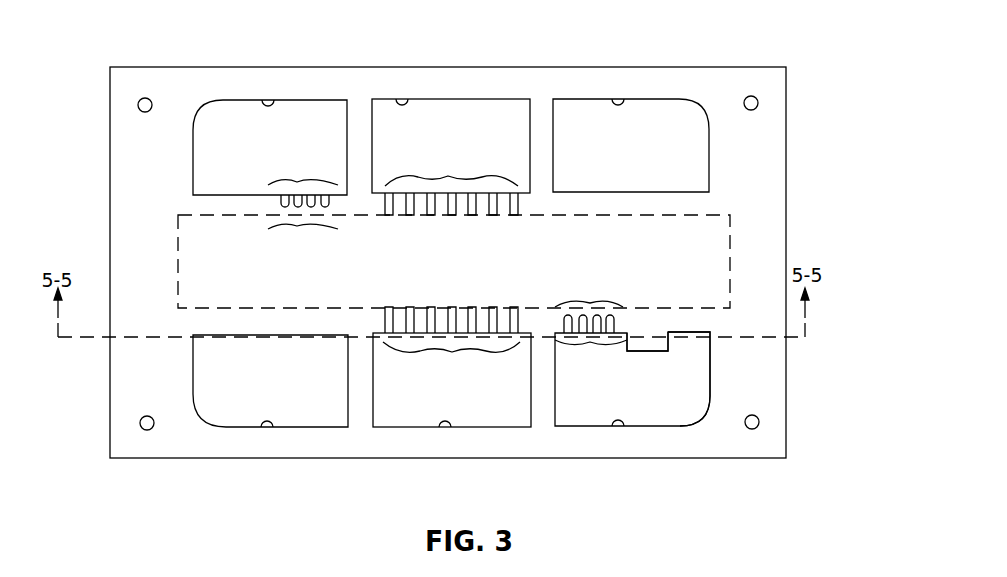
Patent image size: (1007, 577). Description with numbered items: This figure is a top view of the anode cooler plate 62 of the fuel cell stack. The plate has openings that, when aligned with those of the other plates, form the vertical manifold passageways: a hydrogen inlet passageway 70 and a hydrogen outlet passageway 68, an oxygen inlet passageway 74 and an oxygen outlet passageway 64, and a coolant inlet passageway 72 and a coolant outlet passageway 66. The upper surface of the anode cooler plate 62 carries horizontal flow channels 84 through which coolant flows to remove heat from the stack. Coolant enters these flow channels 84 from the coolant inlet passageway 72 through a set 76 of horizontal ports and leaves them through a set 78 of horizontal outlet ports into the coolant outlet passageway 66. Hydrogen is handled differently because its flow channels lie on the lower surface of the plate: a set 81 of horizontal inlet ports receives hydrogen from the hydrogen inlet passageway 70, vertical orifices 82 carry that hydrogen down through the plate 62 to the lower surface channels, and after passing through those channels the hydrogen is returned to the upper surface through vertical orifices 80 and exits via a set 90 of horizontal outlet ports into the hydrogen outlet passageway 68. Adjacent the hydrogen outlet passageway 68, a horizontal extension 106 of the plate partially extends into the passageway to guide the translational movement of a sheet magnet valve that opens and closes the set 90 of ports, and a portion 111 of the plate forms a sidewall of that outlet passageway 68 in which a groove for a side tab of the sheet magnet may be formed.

The anode cooler plate 62 is at (786, 148).
The oxygen outlet passageway 64 is at (262, 419).
The coolant outlet passageway 66 is at (443, 420).
The hydrogen outlet passageway 68 is at (616, 420).
The hydrogen inlet passageway 70 is at (270, 107).
The coolant inlet passageway 72 is at (404, 107).
The oxygen inlet passageway 74 is at (620, 107).
The set of horizontal ports 76 is at (448, 176).
The set of horizontal outlet ports 78 is at (452, 352).
The vertical orifices 80 is at (588, 301).
The set of horizontal inlet ports 81 is at (300, 180).
The vertical orifices 82 is at (299, 226).
The horizontal flow channels 84 is at (730, 235).
The set of horizontal outlet ports 90 is at (598, 340).
The horizontal extension 106 is at (650, 351).
The portion forming sidewall of outlet passageway 111 is at (710, 378).